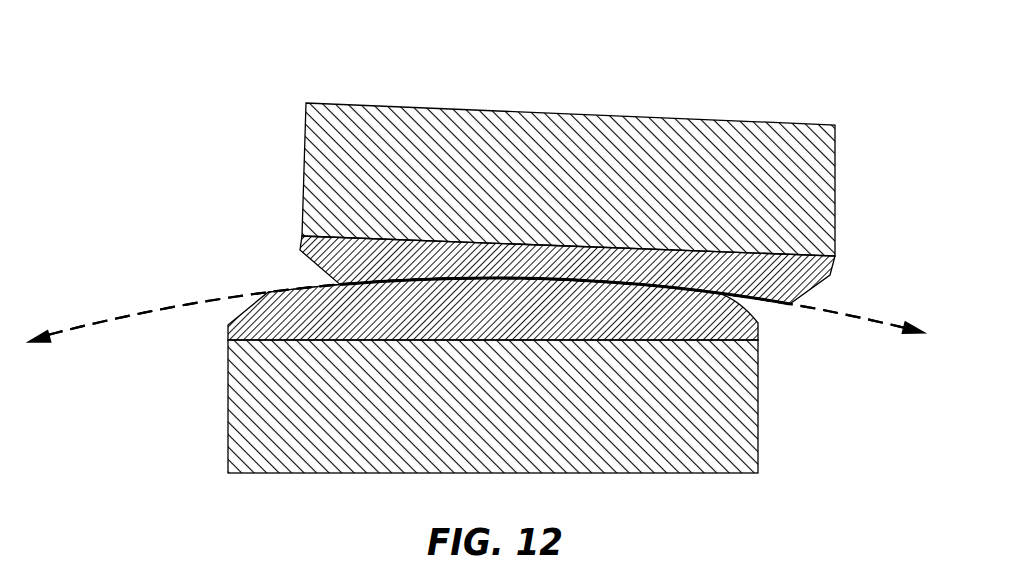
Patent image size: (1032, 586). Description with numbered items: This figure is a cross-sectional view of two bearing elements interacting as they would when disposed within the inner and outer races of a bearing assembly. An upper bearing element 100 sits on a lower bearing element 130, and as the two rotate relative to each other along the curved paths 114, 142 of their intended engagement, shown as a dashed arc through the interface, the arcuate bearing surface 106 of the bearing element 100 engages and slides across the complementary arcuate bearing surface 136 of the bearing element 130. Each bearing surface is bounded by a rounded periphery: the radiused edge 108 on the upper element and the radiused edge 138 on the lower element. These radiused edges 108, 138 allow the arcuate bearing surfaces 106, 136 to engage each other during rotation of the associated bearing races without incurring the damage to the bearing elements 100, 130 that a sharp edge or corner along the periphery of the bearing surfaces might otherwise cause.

The bearing element 100 is at (598, 224).
The arcuate bearing surface 106 is at (767, 300).
The radiused edge 108 is at (787, 303).
The bearing element 130 is at (445, 368).
The arcuate bearing surface 136 is at (293, 289).
The radiused edge 138 is at (267, 293).
The curved path 114 is at (160, 310).
The curved path 142 is at (160, 310).